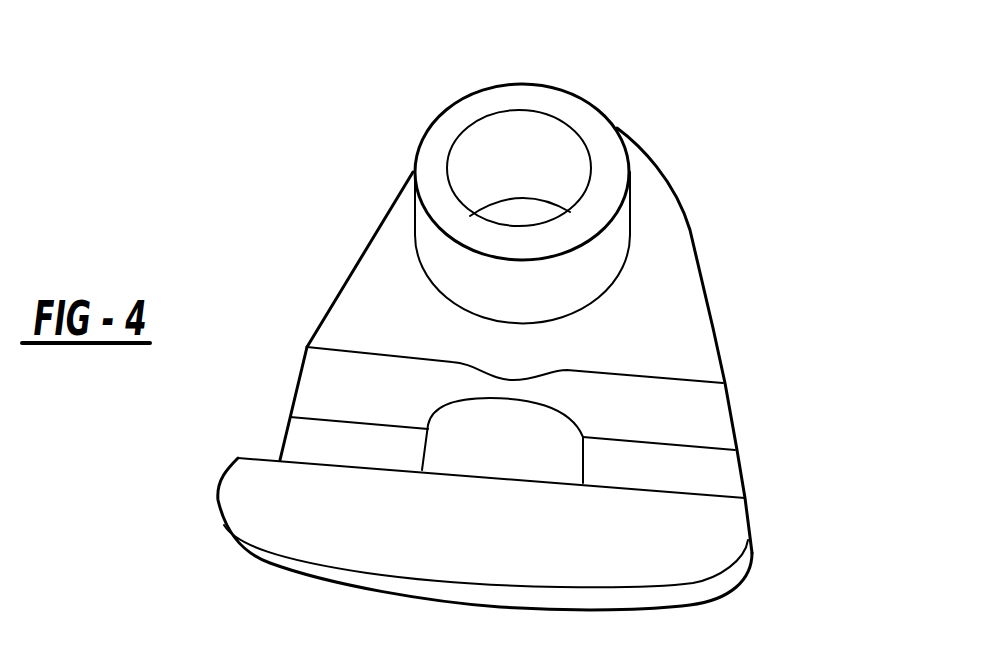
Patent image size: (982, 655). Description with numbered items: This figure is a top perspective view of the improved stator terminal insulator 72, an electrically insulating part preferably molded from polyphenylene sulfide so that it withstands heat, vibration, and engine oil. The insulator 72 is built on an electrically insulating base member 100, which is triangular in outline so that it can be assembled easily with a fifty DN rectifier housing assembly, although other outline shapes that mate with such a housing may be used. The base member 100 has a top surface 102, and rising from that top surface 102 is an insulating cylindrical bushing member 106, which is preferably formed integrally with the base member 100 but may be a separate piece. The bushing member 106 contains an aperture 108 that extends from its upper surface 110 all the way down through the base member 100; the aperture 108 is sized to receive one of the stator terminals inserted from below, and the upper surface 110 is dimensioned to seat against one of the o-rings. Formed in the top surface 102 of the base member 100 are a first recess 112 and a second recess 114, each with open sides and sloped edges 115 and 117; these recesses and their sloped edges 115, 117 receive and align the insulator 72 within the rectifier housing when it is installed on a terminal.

The stator terminal insulator 72 is at (745, 272).
The base member 100 is at (738, 582).
The top surface 102 is at (685, 345).
The cylindrical bushing member 106 is at (613, 249).
The aperture 108 is at (530, 148).
The upper surface 110 is at (445, 132).
The first recess 112 is at (360, 440).
The second recess 114 is at (697, 468).
The sloped edge 115 is at (345, 362).
The sloped edge 117 is at (295, 462).